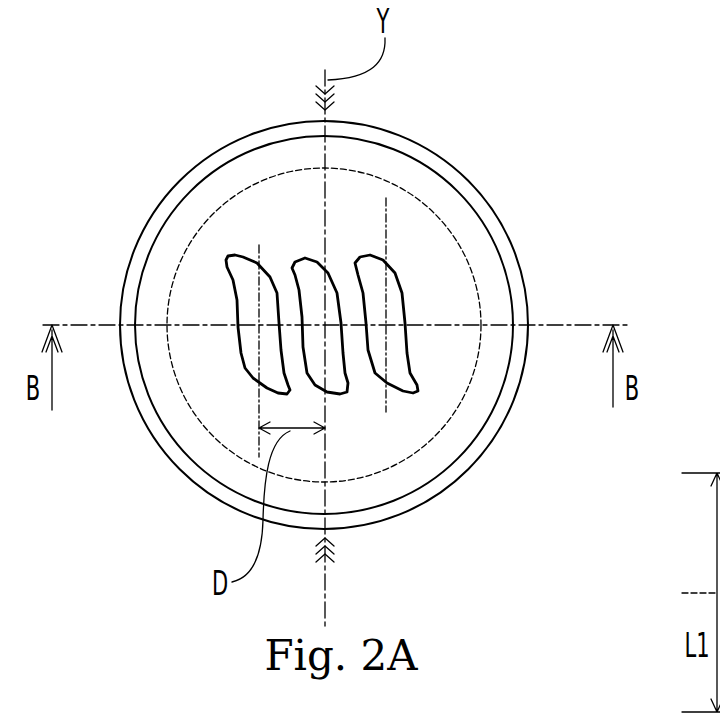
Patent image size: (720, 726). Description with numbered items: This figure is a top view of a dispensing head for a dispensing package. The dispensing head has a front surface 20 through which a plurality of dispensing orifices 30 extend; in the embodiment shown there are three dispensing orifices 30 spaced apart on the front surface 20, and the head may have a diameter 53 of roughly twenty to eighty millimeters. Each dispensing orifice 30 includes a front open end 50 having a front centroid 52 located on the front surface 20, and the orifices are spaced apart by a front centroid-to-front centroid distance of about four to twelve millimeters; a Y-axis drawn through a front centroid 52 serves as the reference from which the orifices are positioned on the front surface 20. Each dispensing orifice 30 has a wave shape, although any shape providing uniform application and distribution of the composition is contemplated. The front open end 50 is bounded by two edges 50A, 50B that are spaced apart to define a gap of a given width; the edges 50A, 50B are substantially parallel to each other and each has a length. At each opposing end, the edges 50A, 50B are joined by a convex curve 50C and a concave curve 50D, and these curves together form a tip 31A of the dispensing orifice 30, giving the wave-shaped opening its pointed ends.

The front surface 20 is at (210, 253).
The dispensing orifices 30 is at (297, 263).
The front open end 50 is at (313, 273).
The front centroid 52 is at (360, 263).
The edge 50A is at (387, 323).
The edge 50B is at (307, 343).
The convex curve 50C is at (303, 347).
The concave curve 50D is at (328, 350).
The diameter 53 is at (512, 290).
The tip 31A is at (349, 393).